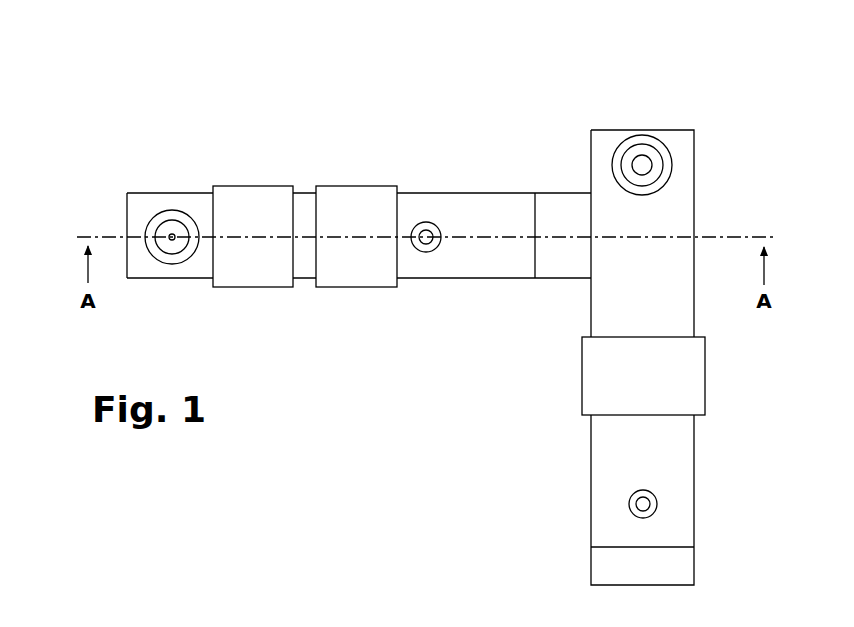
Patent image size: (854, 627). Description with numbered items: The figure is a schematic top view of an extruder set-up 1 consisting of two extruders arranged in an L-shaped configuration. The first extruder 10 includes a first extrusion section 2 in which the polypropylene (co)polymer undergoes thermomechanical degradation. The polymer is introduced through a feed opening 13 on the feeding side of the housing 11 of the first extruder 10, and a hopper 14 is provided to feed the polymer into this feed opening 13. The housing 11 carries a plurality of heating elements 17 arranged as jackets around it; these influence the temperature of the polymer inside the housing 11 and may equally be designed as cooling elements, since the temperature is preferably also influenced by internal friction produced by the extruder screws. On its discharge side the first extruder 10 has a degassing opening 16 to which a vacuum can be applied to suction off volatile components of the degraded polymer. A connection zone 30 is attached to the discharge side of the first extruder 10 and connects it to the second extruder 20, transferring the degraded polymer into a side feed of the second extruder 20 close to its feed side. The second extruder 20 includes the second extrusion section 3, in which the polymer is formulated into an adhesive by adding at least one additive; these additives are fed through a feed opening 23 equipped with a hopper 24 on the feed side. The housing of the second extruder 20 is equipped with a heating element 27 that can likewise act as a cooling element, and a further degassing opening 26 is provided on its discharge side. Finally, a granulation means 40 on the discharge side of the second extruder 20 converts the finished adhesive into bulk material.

The extruder set-up 1 is at (258, 98).
The first extrusion section 2 is at (431, 158).
The second extrusion section 3 is at (745, 402).
The first extruder 10 is at (266, 185).
The housing 11 is at (305, 268).
The feed opening 13 is at (172, 235).
The hopper 14 is at (183, 214).
The degassing opening 16 is at (420, 222).
The heating elements 17 is at (257, 275).
The second extruder 20 is at (672, 218).
The feed opening 23 is at (639, 160).
The hopper 24 is at (661, 140).
The further degassing opening 26 is at (659, 500).
The heating element 27 is at (680, 386).
The connection zone 30 is at (572, 200).
The granulation means 40 is at (678, 569).